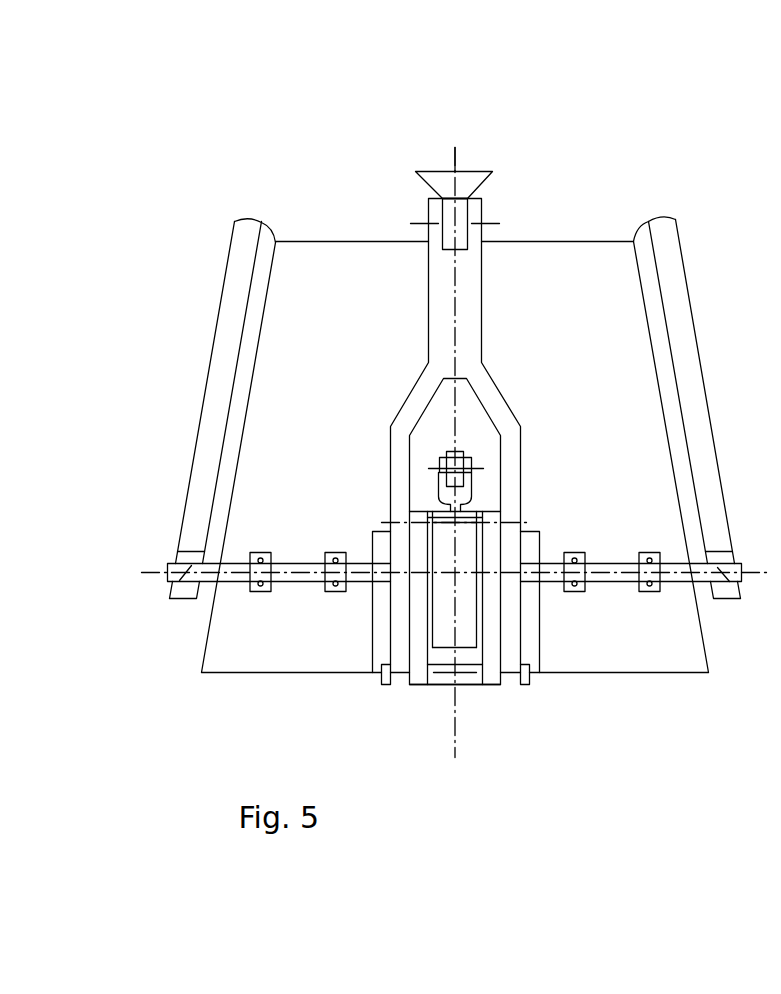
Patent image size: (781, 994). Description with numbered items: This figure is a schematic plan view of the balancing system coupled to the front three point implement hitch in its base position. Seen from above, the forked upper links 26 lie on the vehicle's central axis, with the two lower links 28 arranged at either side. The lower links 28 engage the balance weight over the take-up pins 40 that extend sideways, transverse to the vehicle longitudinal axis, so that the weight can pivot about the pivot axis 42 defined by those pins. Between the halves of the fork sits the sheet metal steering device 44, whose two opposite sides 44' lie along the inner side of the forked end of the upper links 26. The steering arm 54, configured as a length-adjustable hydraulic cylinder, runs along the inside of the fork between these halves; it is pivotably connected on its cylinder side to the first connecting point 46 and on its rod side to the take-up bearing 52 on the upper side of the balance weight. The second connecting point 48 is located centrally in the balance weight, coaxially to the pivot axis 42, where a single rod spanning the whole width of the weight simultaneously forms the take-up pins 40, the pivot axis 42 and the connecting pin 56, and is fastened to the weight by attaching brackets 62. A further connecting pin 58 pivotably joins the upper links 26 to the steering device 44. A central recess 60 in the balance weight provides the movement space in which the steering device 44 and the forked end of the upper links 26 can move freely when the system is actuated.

The upper links 26 is at (445, 298).
The lower links 28 is at (233, 317).
The take-up pins 40 is at (175, 600).
The pivot axis 42 is at (152, 573).
The sheet metal steering device 44 is at (436, 565).
The sheet metal steering device side 44' is at (454, 708).
The first connecting point 46 is at (430, 515).
The second connecting point 48 is at (482, 568).
The take-up bearing 52 is at (468, 468).
The steering arm 54 is at (448, 607).
The connecting pin 56 is at (442, 570).
The connecting pin 58 is at (463, 673).
The recess 60 is at (532, 632).
The attaching brackets 62 is at (262, 553).